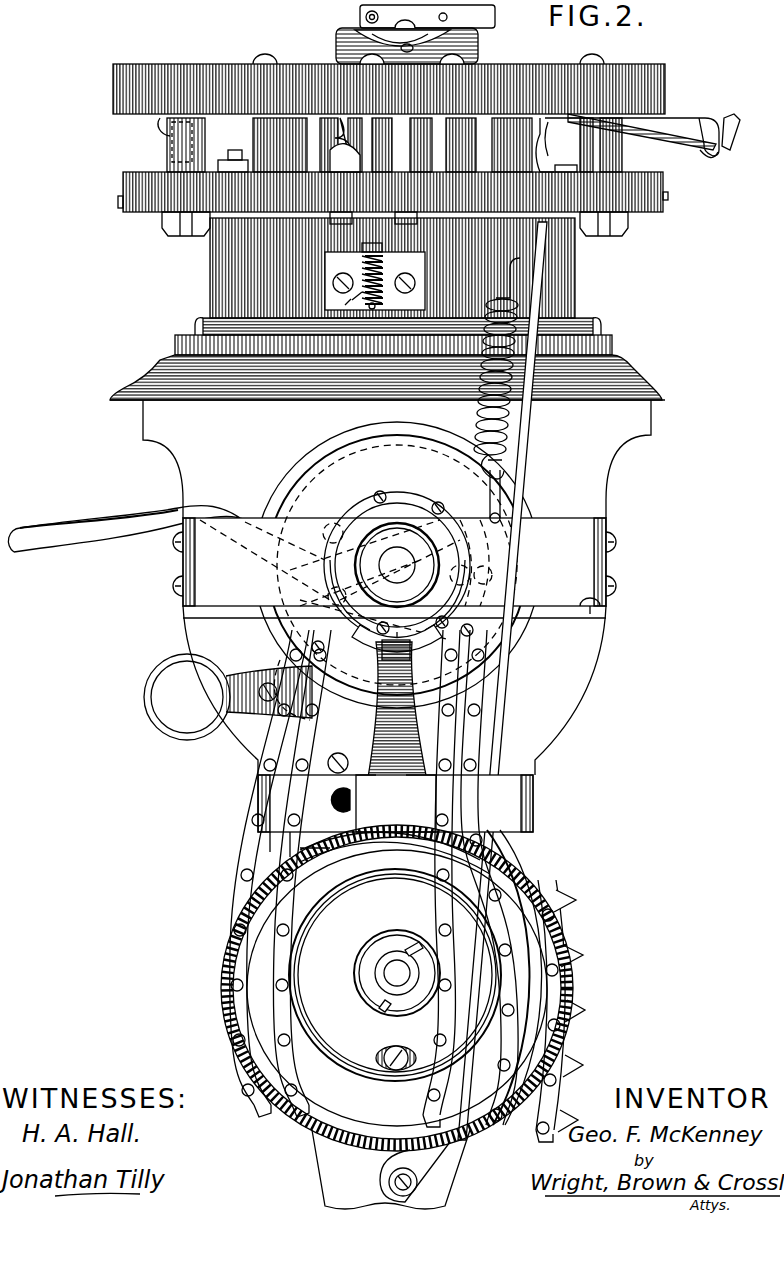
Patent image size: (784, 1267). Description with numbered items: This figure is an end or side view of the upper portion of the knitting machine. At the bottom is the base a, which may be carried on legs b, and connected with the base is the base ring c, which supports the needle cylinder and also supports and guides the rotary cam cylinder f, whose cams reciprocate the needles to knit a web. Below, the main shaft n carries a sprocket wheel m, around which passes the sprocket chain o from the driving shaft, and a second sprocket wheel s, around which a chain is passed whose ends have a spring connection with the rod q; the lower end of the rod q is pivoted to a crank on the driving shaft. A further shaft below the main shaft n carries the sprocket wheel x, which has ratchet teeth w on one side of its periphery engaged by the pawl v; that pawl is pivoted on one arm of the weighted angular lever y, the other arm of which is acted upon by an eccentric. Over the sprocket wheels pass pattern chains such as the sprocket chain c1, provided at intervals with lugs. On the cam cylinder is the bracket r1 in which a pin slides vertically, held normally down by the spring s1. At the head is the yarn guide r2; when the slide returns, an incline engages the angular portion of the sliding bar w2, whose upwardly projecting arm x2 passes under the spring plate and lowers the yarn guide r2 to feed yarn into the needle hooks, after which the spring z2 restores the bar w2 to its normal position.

The base a is at (397, 587).
The legs b is at (391, 1169).
The base ring c is at (630, 374).
The rotary cam cylinder f is at (575, 270).
The sprocket wheel m is at (397, 565).
The main shaft n is at (397, 565).
The sprocket wheel s is at (444, 505).
The rod q is at (504, 668).
The sprocket chain o is at (314, 732).
The weighted angular lever y is at (316, 704).
The pawl v is at (349, 764).
The ratchet teeth w is at (256, 880).
The sprocket wheel x is at (397, 988).
The sprocket chain c1 is at (404, 830).
The bracket r1 is at (340, 274).
The spring s1 is at (405, 273).
The yarn guide r2 is at (557, 139).
The sliding bar w2 is at (683, 119).
The upwardly projecting arm x2 is at (740, 117).
The spring z2 is at (686, 147).